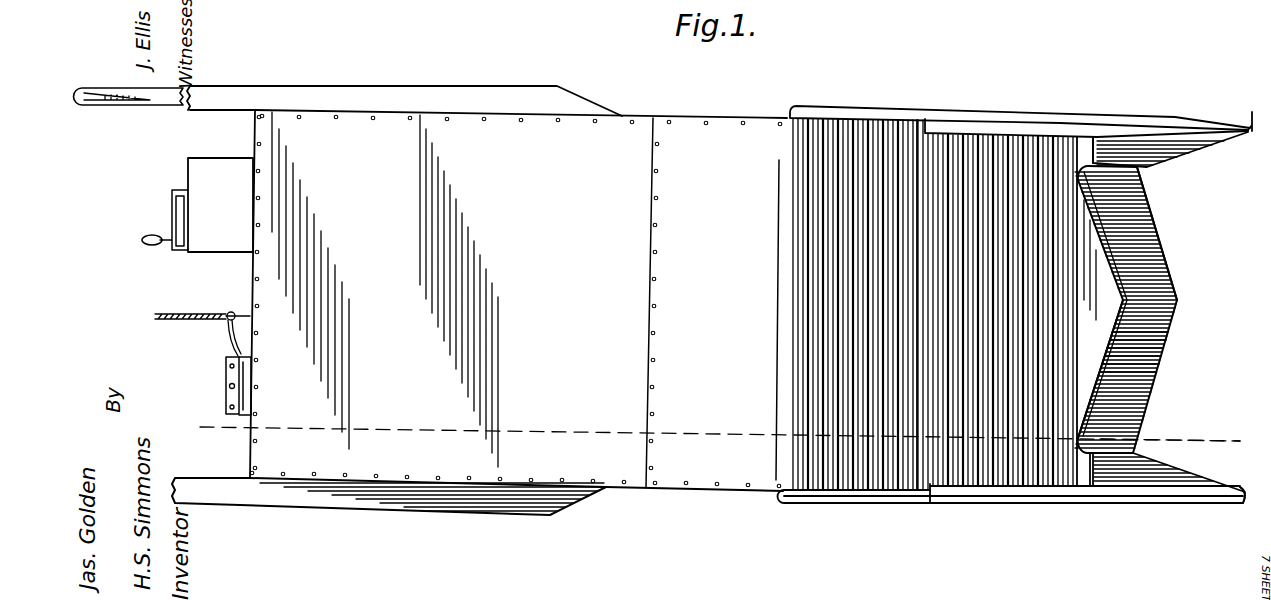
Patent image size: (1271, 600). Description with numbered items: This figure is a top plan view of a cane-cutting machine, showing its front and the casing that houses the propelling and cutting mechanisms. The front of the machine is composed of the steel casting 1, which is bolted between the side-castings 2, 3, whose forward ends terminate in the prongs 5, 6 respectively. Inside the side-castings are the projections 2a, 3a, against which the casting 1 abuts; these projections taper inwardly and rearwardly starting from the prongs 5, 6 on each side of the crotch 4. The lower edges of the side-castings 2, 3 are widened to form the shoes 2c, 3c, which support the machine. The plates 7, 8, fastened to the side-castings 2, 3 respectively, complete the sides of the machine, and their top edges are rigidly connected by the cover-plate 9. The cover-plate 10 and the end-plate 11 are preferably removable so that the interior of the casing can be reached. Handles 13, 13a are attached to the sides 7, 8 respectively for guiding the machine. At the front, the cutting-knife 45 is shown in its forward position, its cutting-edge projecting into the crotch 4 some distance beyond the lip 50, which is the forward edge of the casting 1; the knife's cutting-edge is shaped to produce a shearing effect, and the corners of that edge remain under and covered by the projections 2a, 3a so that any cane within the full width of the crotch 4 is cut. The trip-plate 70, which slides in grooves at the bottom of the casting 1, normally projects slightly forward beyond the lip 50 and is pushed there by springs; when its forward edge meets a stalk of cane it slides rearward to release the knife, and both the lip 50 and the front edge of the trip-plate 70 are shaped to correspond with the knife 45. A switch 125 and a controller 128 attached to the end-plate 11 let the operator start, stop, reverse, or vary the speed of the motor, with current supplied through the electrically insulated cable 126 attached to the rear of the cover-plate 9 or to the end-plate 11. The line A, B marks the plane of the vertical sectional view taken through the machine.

The steel casting 1 is at (1020, 249).
The side-casting 2 is at (933, 503).
The projection 2a is at (1167, 471).
The shoe 2c is at (975, 498).
The side-casting 3 is at (967, 130).
The projection 3a is at (1196, 147).
The shoe 3c is at (1027, 114).
The crotch 4 is at (1134, 309).
The prong 5 is at (1243, 503).
The prong 6 is at (1244, 111).
The plate 7 is at (700, 489).
The plate 8 is at (521, 108).
The cover-plate 9 is at (408, 294).
The cover-plate 10 is at (712, 302).
The end-plate 11 is at (253, 197).
The handle 13 is at (210, 472).
The handle 13a is at (262, 86).
The cutting-knife 45 is at (1175, 284).
The lip 50 is at (1120, 374).
The trip-plate 70 is at (1140, 334).
The switch 125 is at (226, 367).
The electrically insulated cable 126 is at (202, 320).
The controller 128 is at (197, 157).
The section line A—B A is at (710, 431).
The section line A— B is at (1170, 443).